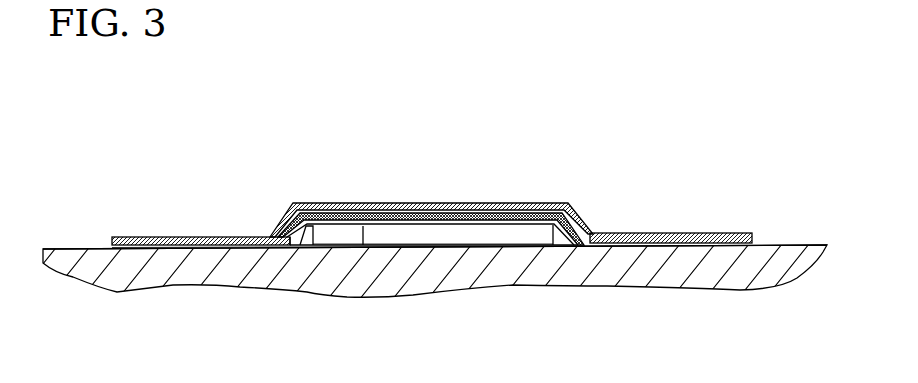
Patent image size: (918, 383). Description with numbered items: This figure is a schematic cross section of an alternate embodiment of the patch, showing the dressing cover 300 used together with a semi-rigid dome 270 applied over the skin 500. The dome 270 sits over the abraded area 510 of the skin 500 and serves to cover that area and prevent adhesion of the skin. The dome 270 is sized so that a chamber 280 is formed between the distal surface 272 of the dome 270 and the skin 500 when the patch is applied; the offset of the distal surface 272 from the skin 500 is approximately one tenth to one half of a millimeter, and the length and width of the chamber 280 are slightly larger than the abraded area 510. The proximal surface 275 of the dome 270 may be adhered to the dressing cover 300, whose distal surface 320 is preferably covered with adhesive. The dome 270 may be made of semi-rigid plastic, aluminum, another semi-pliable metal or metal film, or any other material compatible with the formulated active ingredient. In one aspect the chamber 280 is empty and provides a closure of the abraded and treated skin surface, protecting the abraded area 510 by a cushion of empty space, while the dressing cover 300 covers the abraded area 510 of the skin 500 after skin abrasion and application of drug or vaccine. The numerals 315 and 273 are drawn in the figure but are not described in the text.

The skin 500 is at (656, 290).
The distal surface 320 is at (188, 249).
The first electrode 315 is at (187, 237).
The dressing cover 300 is at (703, 225).
The pixel defining layer 273 is at (303, 237).
The distal surface 272 is at (468, 222).
The chamber 280 is at (522, 232).
The proximal surface 275 is at (337, 218).
The semi-rigid dome 270 is at (414, 200).
The abraded area 510 is at (478, 208).